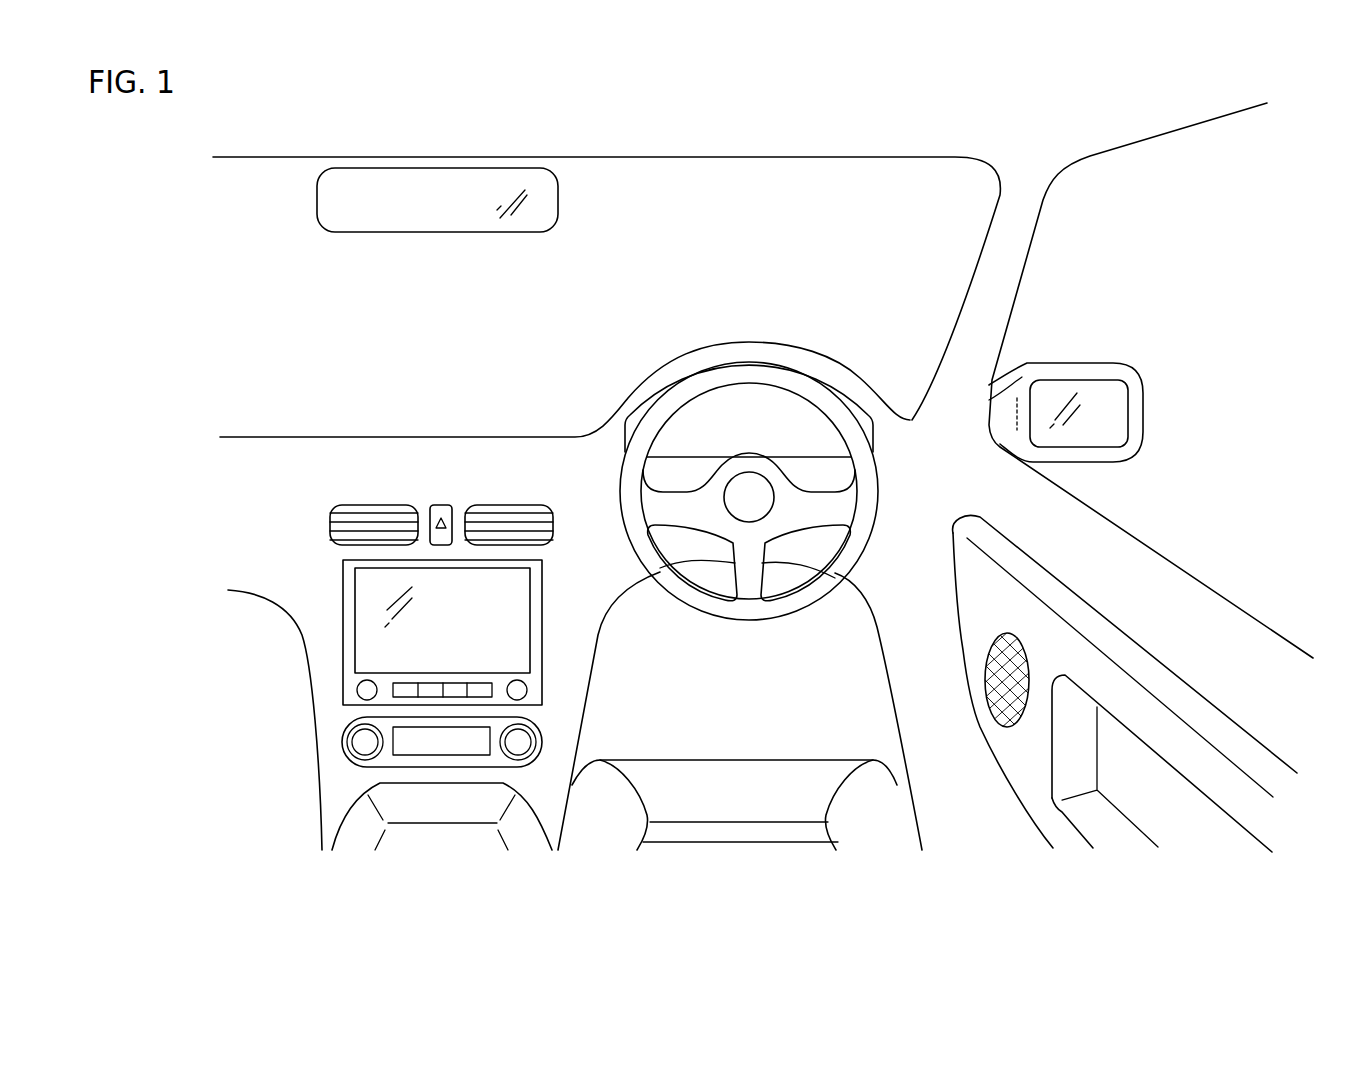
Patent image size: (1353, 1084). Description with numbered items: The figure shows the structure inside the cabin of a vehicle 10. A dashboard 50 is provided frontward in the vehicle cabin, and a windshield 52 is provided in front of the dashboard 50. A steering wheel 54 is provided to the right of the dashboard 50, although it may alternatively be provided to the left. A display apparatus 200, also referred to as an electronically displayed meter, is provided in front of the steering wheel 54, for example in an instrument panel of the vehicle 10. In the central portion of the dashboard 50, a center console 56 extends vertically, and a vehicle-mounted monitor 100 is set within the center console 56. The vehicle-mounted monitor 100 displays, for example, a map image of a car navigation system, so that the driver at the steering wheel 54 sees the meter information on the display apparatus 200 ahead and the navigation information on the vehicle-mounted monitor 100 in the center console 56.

The vehicle 10 is at (626, 930).
The dashboard 50 is at (258, 455).
The windshield 52 is at (898, 175).
The steering wheel 54 is at (813, 380).
The center console 56 is at (317, 793).
The vehicle-mounted monitor 100 is at (338, 633).
The display apparatus 200 is at (698, 368).